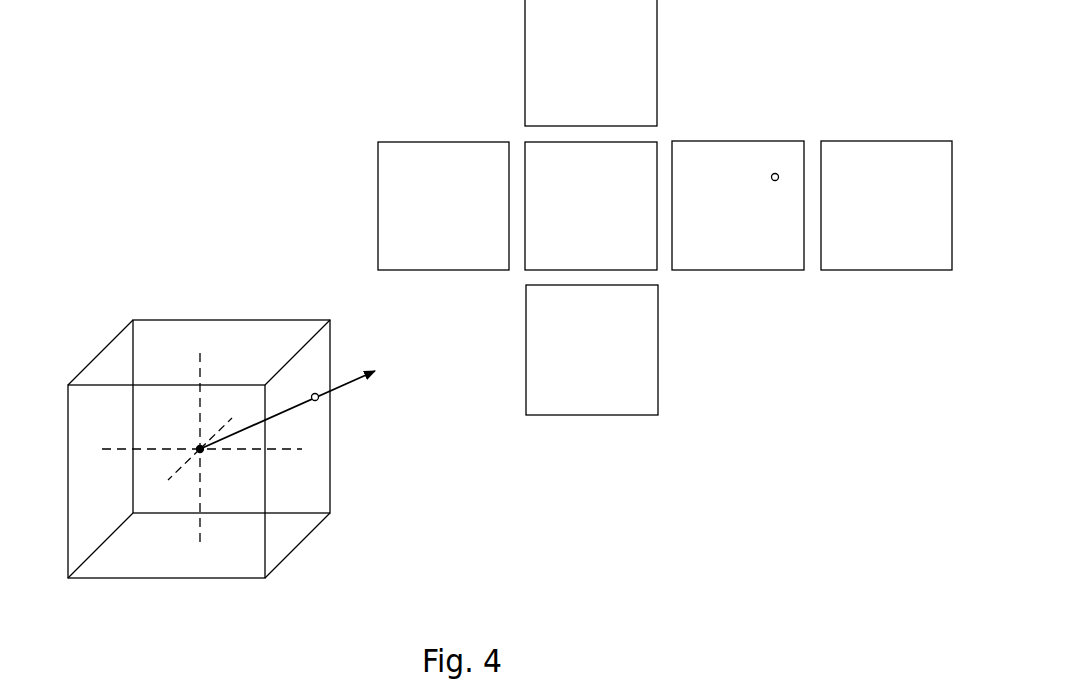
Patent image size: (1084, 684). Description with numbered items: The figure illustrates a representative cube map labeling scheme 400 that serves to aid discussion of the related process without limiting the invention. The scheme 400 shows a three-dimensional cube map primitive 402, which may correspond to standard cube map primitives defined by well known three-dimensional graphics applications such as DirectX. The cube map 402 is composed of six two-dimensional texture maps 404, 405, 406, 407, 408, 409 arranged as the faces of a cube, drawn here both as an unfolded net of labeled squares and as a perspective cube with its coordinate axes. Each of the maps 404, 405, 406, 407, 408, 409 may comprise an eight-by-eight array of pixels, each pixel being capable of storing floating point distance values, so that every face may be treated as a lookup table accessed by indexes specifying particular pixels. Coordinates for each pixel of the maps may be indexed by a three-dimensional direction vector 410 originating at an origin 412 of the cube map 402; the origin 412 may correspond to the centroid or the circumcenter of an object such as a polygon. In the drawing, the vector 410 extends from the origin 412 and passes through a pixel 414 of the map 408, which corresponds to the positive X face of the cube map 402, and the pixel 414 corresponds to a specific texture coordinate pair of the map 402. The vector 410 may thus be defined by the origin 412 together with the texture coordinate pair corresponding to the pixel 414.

The cube map labeling scheme 400 is at (588, 564).
The 3D cube map primitive 402 is at (351, 206).
The two-dimensional texture map 404 is at (443, 206).
The two-dimensional texture map 405 is at (591, 63).
The two-dimensional texture map 406 is at (591, 206).
The two-dimensional texture map 407 is at (592, 350).
The two-dimensional texture map 408 is at (738, 205).
The two-dimensional texture map 409 is at (886, 205).
The 3D direction vector 410 is at (343, 386).
The origin 412 is at (196, 446).
The pixel 414 is at (318, 394).